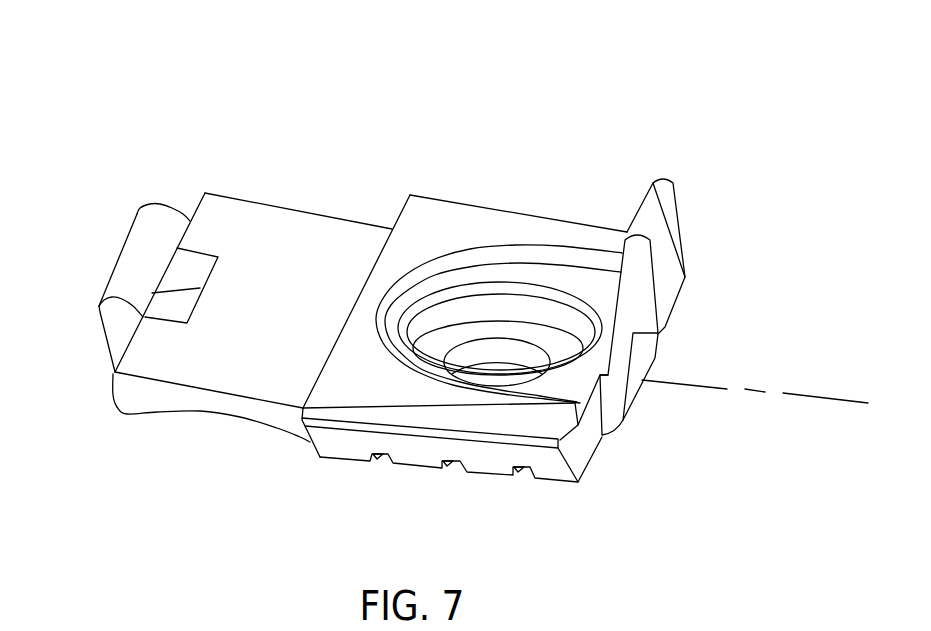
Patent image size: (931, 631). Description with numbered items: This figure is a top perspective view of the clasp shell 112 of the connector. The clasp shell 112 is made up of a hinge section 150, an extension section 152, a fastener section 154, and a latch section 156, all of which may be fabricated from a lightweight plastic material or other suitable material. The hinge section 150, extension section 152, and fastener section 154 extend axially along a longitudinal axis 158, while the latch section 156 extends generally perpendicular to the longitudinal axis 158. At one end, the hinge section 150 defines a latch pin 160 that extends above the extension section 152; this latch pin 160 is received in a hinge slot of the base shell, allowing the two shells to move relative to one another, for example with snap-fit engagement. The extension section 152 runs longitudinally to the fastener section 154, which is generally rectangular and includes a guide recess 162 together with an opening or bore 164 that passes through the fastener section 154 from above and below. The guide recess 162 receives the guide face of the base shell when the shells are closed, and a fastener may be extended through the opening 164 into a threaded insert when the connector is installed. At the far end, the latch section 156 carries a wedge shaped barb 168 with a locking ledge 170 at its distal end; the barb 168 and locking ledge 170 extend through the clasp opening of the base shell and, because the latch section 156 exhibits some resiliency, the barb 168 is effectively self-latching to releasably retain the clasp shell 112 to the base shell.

The clasp shell 112 is at (462, 90).
The hinge section 150 is at (110, 362).
The extension section 152 is at (283, 226).
The fastener section 154 is at (420, 463).
The latch section 156 is at (665, 170).
The longitudinal axis 158 is at (803, 393).
The latch pin 160 is at (122, 262).
The guide recess 162 is at (527, 262).
The opening or bore 164 is at (492, 378).
The wedge shaped barb 168 is at (667, 247).
The locking ledge 170 is at (663, 327).